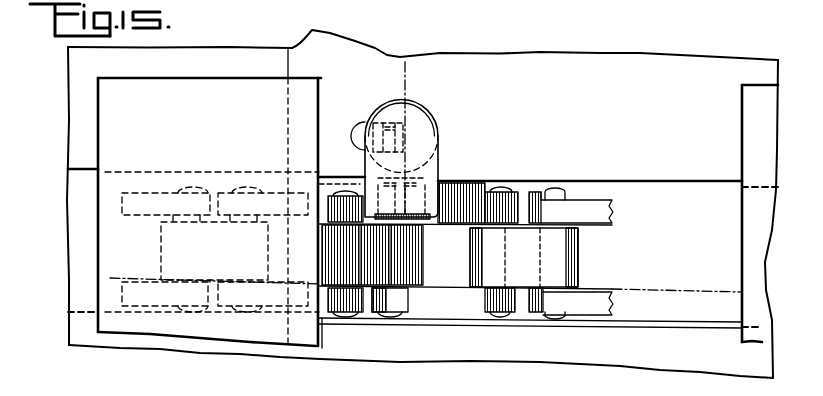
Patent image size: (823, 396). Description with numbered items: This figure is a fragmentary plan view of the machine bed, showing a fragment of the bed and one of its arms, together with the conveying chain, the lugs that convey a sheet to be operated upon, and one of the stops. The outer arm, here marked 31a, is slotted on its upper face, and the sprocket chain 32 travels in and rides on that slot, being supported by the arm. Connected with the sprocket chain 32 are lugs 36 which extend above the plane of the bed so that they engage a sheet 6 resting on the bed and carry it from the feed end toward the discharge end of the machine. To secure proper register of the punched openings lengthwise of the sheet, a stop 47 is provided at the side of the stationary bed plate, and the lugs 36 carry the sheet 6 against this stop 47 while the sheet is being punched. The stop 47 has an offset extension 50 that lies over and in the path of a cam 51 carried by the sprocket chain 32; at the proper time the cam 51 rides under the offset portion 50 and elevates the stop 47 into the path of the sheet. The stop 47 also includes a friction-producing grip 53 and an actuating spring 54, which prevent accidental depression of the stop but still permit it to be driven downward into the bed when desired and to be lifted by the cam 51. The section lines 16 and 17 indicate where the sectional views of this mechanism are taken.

The sheet 6 is at (313, 100).
The section line 16- 16 is at (110, 278).
The section line 17- 17 is at (405, 62).
The guide plate 31a is at (680, 219).
The sprocket chains 32 is at (593, 223).
The lugs 36 is at (382, 260).
The stops 47 is at (425, 118).
The offset extensions 50 is at (425, 201).
The cams 51 is at (457, 204).
The friction-producing grip 53 is at (359, 133).
The actuating spring 54 is at (398, 137).